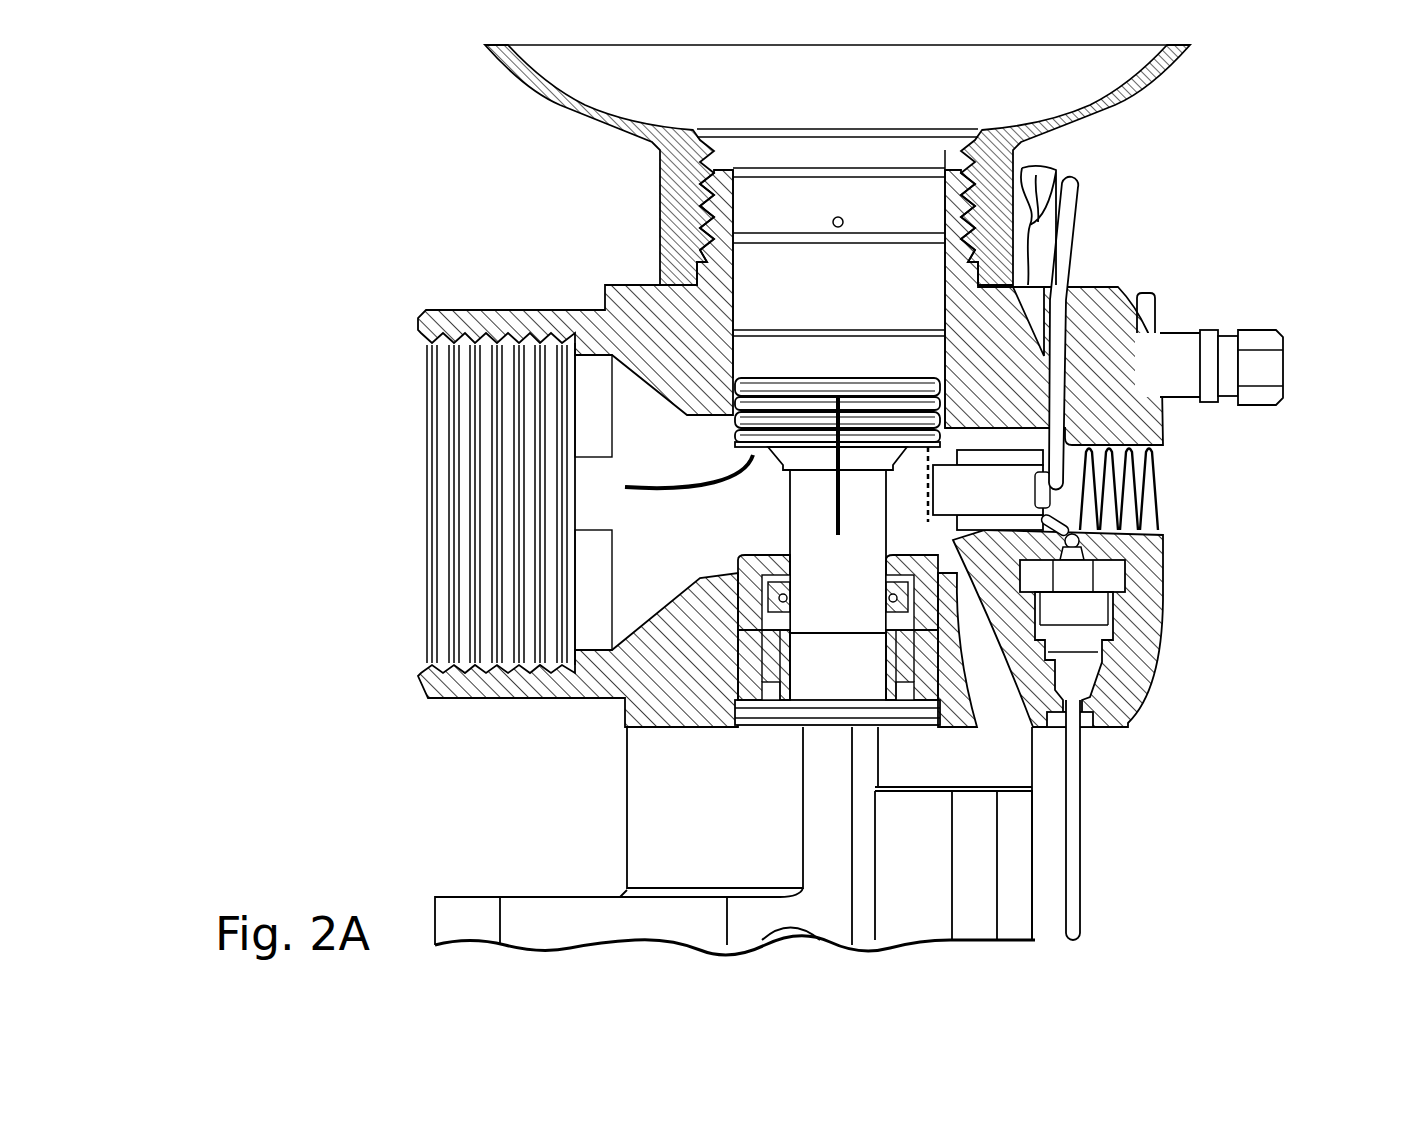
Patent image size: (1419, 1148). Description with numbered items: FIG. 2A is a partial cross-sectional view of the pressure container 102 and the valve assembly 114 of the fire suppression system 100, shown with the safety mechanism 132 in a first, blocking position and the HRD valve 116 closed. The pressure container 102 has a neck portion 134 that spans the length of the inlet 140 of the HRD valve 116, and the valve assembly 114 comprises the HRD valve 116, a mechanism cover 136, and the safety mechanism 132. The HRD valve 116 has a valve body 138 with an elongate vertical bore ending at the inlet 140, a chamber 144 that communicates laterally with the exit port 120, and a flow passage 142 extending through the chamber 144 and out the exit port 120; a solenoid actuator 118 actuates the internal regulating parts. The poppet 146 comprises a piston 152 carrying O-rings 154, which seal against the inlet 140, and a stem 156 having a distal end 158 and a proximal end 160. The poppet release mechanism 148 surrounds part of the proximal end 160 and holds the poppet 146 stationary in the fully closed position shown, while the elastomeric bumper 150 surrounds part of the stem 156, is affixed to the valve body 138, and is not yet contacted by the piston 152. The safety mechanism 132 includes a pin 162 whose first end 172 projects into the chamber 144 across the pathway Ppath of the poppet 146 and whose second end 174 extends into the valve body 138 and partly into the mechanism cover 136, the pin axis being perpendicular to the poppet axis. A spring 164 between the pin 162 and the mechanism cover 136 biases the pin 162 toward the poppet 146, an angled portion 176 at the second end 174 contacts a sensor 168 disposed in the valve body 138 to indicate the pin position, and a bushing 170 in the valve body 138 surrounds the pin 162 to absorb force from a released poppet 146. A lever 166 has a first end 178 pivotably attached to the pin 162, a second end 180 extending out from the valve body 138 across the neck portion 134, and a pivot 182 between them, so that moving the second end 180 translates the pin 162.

The fire suppression system 100 is at (372, 108).
The pressure container 102 is at (557, 106).
The valve assembly 114 is at (540, 302).
The HRD valve 116 is at (627, 730).
The solenoid actuator 118 is at (693, 728).
The exit port 120 is at (512, 433).
The safety mechanism 132 is at (1160, 450).
The neck portion 134 is at (1057, 176).
The mechanism cover 136 is at (1160, 520).
The valve body 138 is at (621, 282).
The inlet 140 is at (712, 208).
The flow passage 142 is at (615, 487).
The chamber 144 is at (905, 535).
The poppet 146 is at (772, 492).
The poppet release mechanism 148 is at (640, 700).
The elastomeric bumper 150 is at (840, 612).
The piston 152 is at (765, 377).
The O-rings 154 is at (783, 458).
The stem 156 is at (775, 560).
The distal end 158 is at (790, 472).
The proximal end 160 is at (782, 635).
The pin 162 is at (985, 430).
The spring 164 is at (1115, 482).
The lever 166 is at (1085, 245).
The sensor 168 is at (1098, 665).
The bushing 170 is at (1017, 455).
The first end 172 is at (1045, 630).
The second end 174 is at (1064, 522).
The angled portion 176 is at (1078, 542).
The first end 178 is at (1062, 500).
The second end 180 is at (1085, 190).
The pivot 182 is at (962, 445).
The pathway Ppath is at (1048, 695).